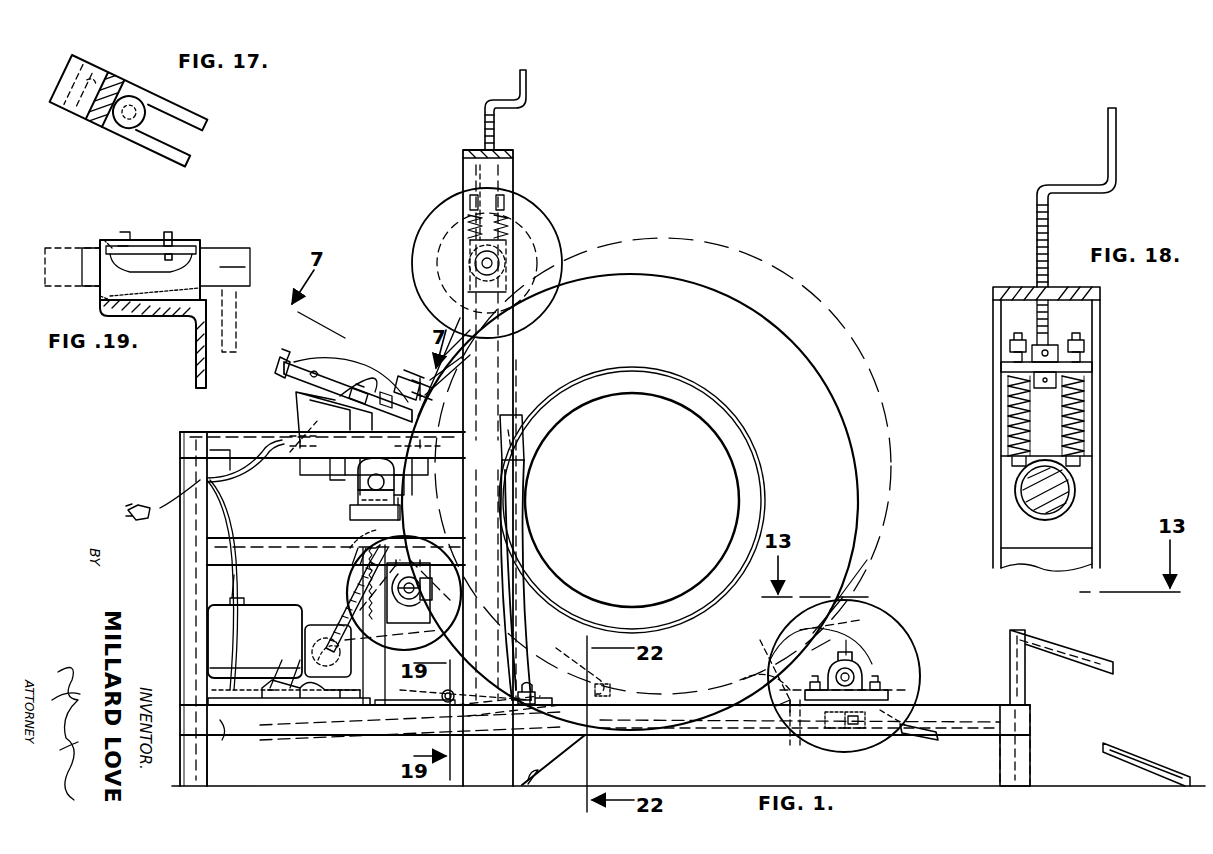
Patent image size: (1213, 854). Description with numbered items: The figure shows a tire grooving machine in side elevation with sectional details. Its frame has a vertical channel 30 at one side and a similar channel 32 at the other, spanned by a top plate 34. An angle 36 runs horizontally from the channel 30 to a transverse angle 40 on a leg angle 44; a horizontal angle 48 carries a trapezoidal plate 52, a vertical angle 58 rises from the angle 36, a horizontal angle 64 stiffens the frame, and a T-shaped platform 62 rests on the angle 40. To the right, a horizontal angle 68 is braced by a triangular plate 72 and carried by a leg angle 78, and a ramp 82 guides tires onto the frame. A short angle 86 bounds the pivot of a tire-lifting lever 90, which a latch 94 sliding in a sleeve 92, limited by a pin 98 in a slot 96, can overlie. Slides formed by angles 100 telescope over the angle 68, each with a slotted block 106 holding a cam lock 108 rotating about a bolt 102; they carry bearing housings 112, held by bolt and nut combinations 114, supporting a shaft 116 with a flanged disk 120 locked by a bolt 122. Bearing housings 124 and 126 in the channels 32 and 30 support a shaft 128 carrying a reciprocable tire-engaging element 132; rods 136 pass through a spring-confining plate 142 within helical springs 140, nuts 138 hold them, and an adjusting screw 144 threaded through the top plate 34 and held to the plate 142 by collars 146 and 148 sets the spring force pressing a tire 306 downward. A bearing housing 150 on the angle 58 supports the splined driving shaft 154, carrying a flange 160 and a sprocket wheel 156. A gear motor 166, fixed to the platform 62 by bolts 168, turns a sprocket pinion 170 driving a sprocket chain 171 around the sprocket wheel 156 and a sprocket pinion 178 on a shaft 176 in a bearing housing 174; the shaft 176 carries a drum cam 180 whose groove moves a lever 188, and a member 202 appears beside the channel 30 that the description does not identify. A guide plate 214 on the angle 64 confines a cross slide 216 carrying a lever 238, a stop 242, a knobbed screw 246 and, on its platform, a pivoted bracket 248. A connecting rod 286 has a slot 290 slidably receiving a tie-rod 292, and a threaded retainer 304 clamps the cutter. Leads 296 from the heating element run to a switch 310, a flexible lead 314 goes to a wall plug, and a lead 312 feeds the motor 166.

In FIG. 1, the vertically directed channel 30 is at (520, 378).
In FIG. 18, the vertically directed channel 32 is at (995, 510).
In FIG. 18, the top plate 34 is at (1003, 290).
In FIG. 1, the top plate 34 is at (465, 150).
In FIG. 19, the angle 36 is at (160, 318).
In FIG. 1, the angle 36 is at (388, 736).
In FIG. 1, the transversely extending angle 40 is at (226, 738).
In FIG. 1, the vertically directed angle 44 is at (208, 776).
In FIG. 1, the horizontal angle 48 is at (290, 530).
In FIG. 1, the trapezoidal plate 52 is at (345, 538).
In FIG. 1, the vertically directed angle 58 is at (418, 698).
In FIG. 1, the T-shaped platform 62 is at (252, 700).
In FIG. 1, the horizontally disposed angle 64 is at (238, 430).
In FIG. 1, the horizontally disposed angle 68 is at (742, 730).
In FIG. 1, the triangular plate 72 is at (552, 752).
In FIG. 1, the vertically directed angle 78 is at (1002, 778).
In FIG. 1, the ramp 82 is at (1108, 744).
In FIG. 1, the short angle 86 is at (538, 694).
In FIG. 19, the lever 90 is at (236, 306).
In FIG. 1, the lever 90 is at (530, 650).
In FIG. 19, the sleeve 92 is at (200, 240).
In FIG. 1, the sleeve 92 is at (458, 690).
In FIG. 19, the latch 94 is at (248, 255).
In FIG. 1, the latch 94 is at (440, 690).
In FIG. 19, the slot 96 is at (146, 240).
In FIG. 19, the pin 98 is at (172, 232).
In FIG. 1, the angles (slides) 100 is at (790, 700).
In FIG. 1, the bolt 102 is at (852, 748).
In FIG. 1, the slotted block 106 is at (824, 746).
In FIG. 1, the cam-like clamp or lock 108 is at (922, 742).
In FIG. 1, the bearing housing 112 is at (890, 695).
In FIG. 1, the bolt and nut combinations 114 is at (812, 688).
In FIG. 1, the rotatable shaft 116 is at (862, 676).
In FIG. 1, the tire-guiding flanged disk 120 is at (900, 630).
In FIG. 1, the bolt 122 is at (852, 652).
In FIG. 18, the bearing housing 124 is at (1088, 496).
In FIG. 1, the bearing housing 126 is at (452, 294).
In FIG. 18, the rotatable shaft 128 is at (1043, 512).
In FIG. 1, the rotatable shaft 128 is at (500, 262).
In FIG. 1, the reciprocable tire-engaging element 132 is at (540, 218).
In FIG. 18, the rods 136 is at (1012, 358).
In FIG. 18, the nuts 138 is at (1010, 346).
In FIG. 18, the helical springs 140 is at (1008, 412).
In FIG. 18, the spring-confining plate 142 is at (1093, 368).
In FIG. 18, the adjusting screw 144 is at (1040, 200).
In FIG. 1, the adjusting screw 144 is at (486, 103).
In FIG. 18, the collar 146 is at (1056, 345).
In FIG. 18, the collar 148 is at (1047, 390).
In FIG. 1, the bearing housing 150 is at (412, 604).
In FIG. 1, the shaft 154 is at (462, 590).
In FIG. 1, the sprocket wheel 156 is at (500, 505).
In FIG. 1, the tire-engaging element 160 is at (338, 582).
In FIG. 1, the gear motor 166 is at (268, 612).
In FIG. 1, the bolts 168 is at (292, 658).
In FIG. 1, the sprocket pinion 170 is at (314, 640).
In FIG. 1, the sprocket chain 171 is at (338, 594).
In FIG. 1, the bearing housing 174 is at (404, 490).
In FIG. 1, the rotatable shaft 176 is at (356, 484).
In FIG. 1, the sprocket pinion 178 is at (356, 500).
In FIG. 1, the drum cam 180 is at (430, 478).
In FIG. 1, the lever 188 is at (343, 468).
In FIG. 1, the arm 202 is at (500, 418).
In FIG. 1, the guide plate 214 is at (298, 456).
In FIG. 1, the cross slide 216 is at (296, 414).
In FIG. 1, the lever 238 is at (362, 388).
In FIG. 1, the stop 242 is at (314, 372).
In FIG. 1, the screw with knob 246 is at (282, 360).
In FIG. 1, the bracket 248 is at (387, 392).
In FIG. 17, the connecting rod 286 is at (106, 118).
In FIG. 1, the connecting rod 286 is at (400, 372).
In FIG. 17, the slot 290 is at (199, 120).
In FIG. 17, the tie-rod 292 is at (128, 128).
In FIG. 1, the leads 296 is at (346, 365).
In FIG. 1, the threaded retainer 304 is at (466, 396).
In FIG. 1, the tire 306 is at (812, 372).
In FIG. 1, the switch 310 is at (215, 464).
In FIG. 1, the lead 312 is at (234, 510).
In FIG. 1, the flexible lead 314 is at (162, 512).